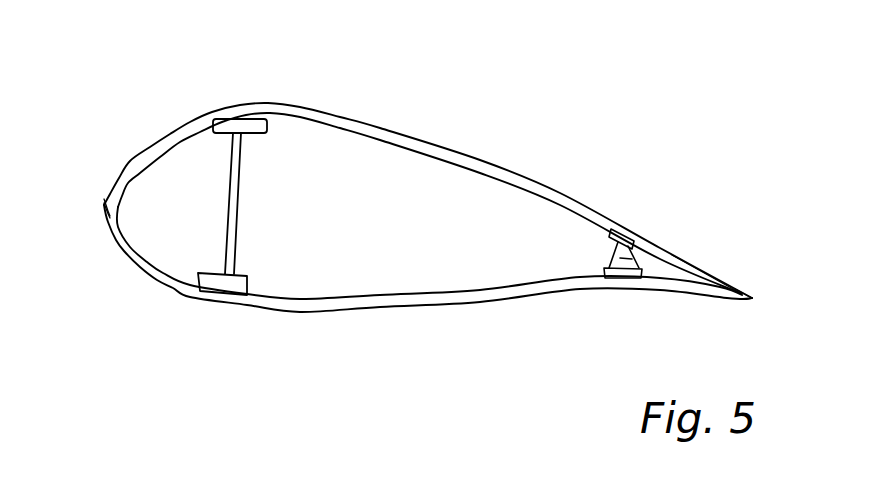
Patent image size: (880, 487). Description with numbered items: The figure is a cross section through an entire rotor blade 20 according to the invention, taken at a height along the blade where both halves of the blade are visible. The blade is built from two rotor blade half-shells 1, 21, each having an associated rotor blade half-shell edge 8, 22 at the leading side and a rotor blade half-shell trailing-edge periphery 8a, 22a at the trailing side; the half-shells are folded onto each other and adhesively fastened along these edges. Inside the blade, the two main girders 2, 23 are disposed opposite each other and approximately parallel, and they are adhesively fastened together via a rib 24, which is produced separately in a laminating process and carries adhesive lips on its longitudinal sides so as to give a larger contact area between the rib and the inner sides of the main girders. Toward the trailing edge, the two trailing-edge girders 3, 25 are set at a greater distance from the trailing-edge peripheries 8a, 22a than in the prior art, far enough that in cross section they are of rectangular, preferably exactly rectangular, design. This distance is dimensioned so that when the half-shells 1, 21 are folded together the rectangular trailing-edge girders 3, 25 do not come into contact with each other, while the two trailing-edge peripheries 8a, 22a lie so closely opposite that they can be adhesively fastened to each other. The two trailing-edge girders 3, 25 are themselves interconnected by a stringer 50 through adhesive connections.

The rotor blade half-shell 1 is at (363, 296).
The main girder 2 is at (228, 280).
The trailing-edge girder 3 is at (616, 232).
The rotor blade half-shell edge 8 is at (107, 213).
The rotor blade half-shell trailing-edge periphery 8a is at (741, 313).
The rotor blade 20 is at (531, 94).
The rotor blade half-shell 21 is at (368, 140).
The rotor blade half-shell edge 22 is at (110, 200).
The rotor blade half-shell trailing-edge periphery 22a is at (748, 272).
The main girder 23 is at (244, 120).
The rib 24 is at (227, 207).
The trailing-edge girder 25 is at (628, 232).
The stringer 50 is at (678, 243).